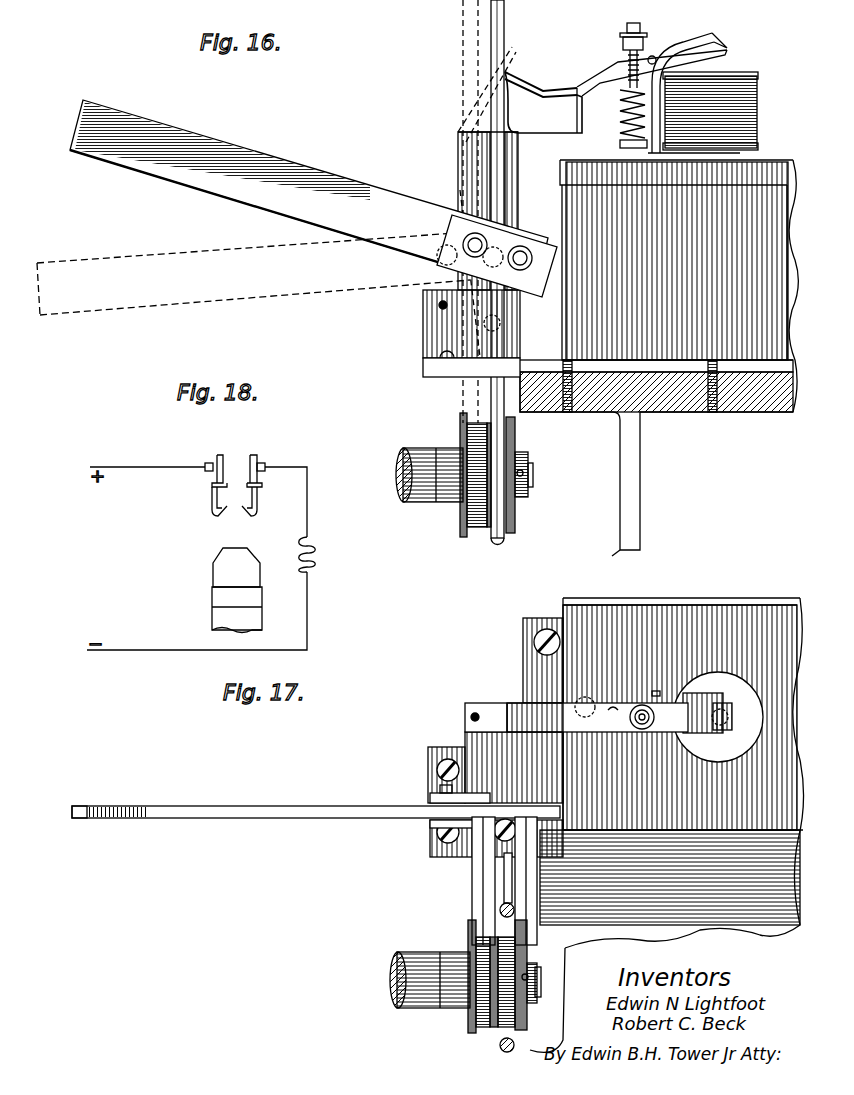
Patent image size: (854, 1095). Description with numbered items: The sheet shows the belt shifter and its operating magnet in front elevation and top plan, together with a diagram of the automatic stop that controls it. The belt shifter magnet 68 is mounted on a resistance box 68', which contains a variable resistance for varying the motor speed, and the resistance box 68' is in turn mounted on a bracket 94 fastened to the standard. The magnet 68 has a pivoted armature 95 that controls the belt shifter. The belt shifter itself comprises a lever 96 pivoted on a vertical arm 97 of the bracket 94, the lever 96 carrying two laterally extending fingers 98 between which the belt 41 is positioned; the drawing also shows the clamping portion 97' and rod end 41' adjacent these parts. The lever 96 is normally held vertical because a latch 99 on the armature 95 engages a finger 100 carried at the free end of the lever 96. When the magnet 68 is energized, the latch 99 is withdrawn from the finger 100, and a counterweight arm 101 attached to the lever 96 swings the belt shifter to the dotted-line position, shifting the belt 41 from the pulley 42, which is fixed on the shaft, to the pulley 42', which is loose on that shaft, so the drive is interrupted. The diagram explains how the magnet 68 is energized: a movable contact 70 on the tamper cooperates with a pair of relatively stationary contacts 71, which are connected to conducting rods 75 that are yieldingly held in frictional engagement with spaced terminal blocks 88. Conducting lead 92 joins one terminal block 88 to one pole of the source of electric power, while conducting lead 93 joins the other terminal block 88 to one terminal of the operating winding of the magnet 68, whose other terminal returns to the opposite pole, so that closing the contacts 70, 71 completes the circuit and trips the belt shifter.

In FIG. 16, the belt 41 is at (481, 280).
In FIG. 17, the belt 41 is at (521, 1051).
In FIG. 17, the rod end 41' is at (536, 885).
In FIG. 16, the pulley 42 is at (532, 475).
In FIG. 17, the pulley 42 is at (555, 975).
In FIG. 16, the pulley 42' is at (443, 476).
In FIG. 17, the pulley 42' is at (452, 996).
In FIG. 16, the belt shifter magnet 68 is at (679, 222).
In FIG. 18, the belt shifter magnet 68 is at (320, 554).
In FIG. 17, the belt shifter magnet 68 is at (683, 741).
In FIG. 16, the resistance box 68' is at (656, 443).
In FIG. 18, the movable contact 70 is at (228, 570).
In FIG. 18, the relatively stationary contacts 71 is at (212, 504).
In FIG. 18, the conducting rods 75 is at (219, 460).
In FIG. 18, the terminal blocks 88 is at (207, 472).
In FIG. 18, the conducting lead 92 is at (165, 467).
In FIG. 18, the conducting lead 93 is at (308, 484).
In FIG. 16, the bracket 94 is at (672, 366).
In FIG. 17, the bracket 94 is at (532, 668).
In FIG. 16, the armature 95 is at (593, 82).
In FIG. 17, the armature 95 is at (612, 733).
In FIG. 16, the lever 96 is at (410, 177).
In FIG. 17, the lever 96 is at (470, 755).
In FIG. 16, the vertical arm 97 is at (450, 333).
In FIG. 17, the vertical arm 97 is at (440, 792).
In FIG. 17, the clamp block 97' is at (440, 831).
In FIG. 16, the fingers 98 is at (468, 238).
In FIG. 17, the fingers 98 is at (479, 897).
In FIG. 16, the latch 99 is at (567, 96).
In FIG. 17, the latch 99 is at (600, 700).
In FIG. 16, the finger 100 is at (502, 86).
In FIG. 17, the finger 100 is at (603, 706).
In FIG. 16, the counterweight arm 101 is at (205, 180).
In FIG. 17, the counterweight arm 101 is at (218, 800).